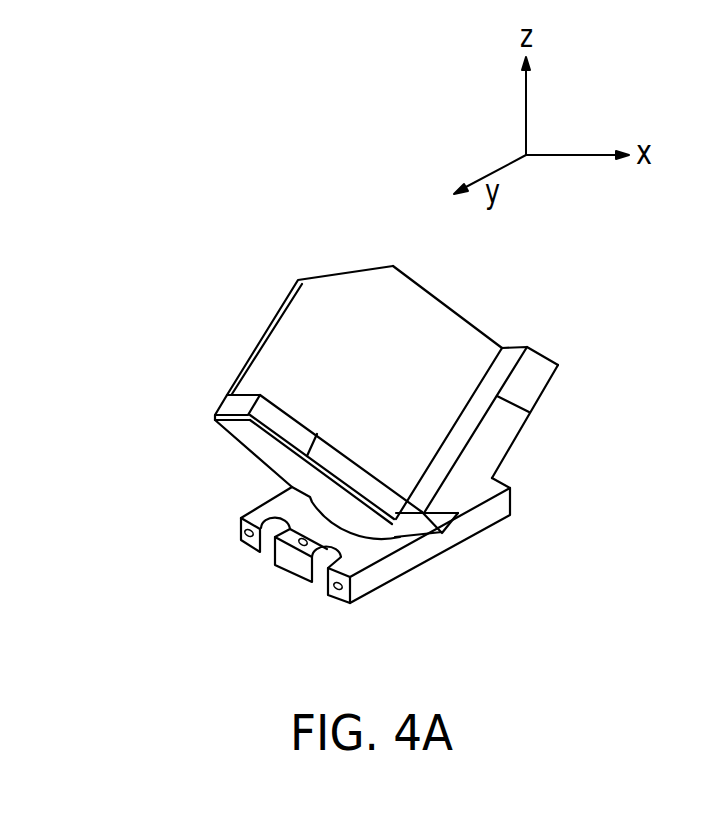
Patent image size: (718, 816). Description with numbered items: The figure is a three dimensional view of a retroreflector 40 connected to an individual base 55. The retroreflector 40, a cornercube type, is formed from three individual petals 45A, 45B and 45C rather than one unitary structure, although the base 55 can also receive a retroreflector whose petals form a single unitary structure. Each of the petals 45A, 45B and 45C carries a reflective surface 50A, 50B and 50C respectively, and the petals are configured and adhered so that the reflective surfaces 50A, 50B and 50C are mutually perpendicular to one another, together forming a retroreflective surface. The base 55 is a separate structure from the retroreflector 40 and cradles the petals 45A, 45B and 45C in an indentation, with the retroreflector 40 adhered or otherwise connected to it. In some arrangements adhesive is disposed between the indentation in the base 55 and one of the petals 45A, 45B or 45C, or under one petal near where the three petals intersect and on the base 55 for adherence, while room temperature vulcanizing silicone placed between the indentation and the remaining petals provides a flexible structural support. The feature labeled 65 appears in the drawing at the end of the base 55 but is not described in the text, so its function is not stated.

The retroreflector 40 is at (166, 400).
The petal 45A is at (235, 437).
The petal 45B is at (345, 273).
The petal 45C is at (548, 358).
The reflective surface 50A is at (280, 405).
The reflective surface 50B is at (397, 386).
The reflective surface 50C is at (492, 382).
The base 55 is at (383, 573).
The clamp bracket 65 is at (266, 578).